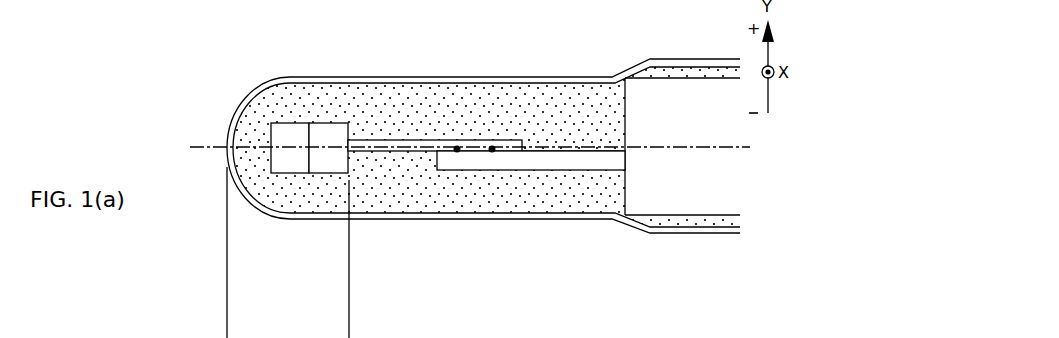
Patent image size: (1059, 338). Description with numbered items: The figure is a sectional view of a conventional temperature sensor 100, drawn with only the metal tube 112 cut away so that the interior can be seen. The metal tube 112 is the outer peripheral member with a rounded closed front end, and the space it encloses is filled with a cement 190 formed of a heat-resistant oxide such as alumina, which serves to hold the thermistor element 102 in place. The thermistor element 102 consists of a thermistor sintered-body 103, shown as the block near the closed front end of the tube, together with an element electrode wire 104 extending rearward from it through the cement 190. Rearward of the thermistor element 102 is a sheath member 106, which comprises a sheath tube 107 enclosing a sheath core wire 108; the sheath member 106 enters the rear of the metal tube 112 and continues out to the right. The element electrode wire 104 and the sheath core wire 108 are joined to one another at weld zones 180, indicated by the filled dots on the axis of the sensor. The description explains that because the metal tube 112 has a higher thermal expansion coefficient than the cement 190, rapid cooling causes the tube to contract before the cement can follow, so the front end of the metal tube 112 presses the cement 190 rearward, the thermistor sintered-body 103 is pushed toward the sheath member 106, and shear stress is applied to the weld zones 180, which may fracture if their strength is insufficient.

The temperature sensor 100 is at (244, 38).
The cement 190 is at (362, 102).
The metal tube 112 is at (562, 77).
The thermistor element 102 is at (446, 220).
The thermistor sintered-body 103 is at (285, 163).
The element electrode wire 104 is at (394, 152).
The weld zones 180 is at (492, 152).
The sheath member 106 is at (588, 190).
The sheath core wire 108 is at (603, 157).
The sheath tube 107 is at (673, 193).